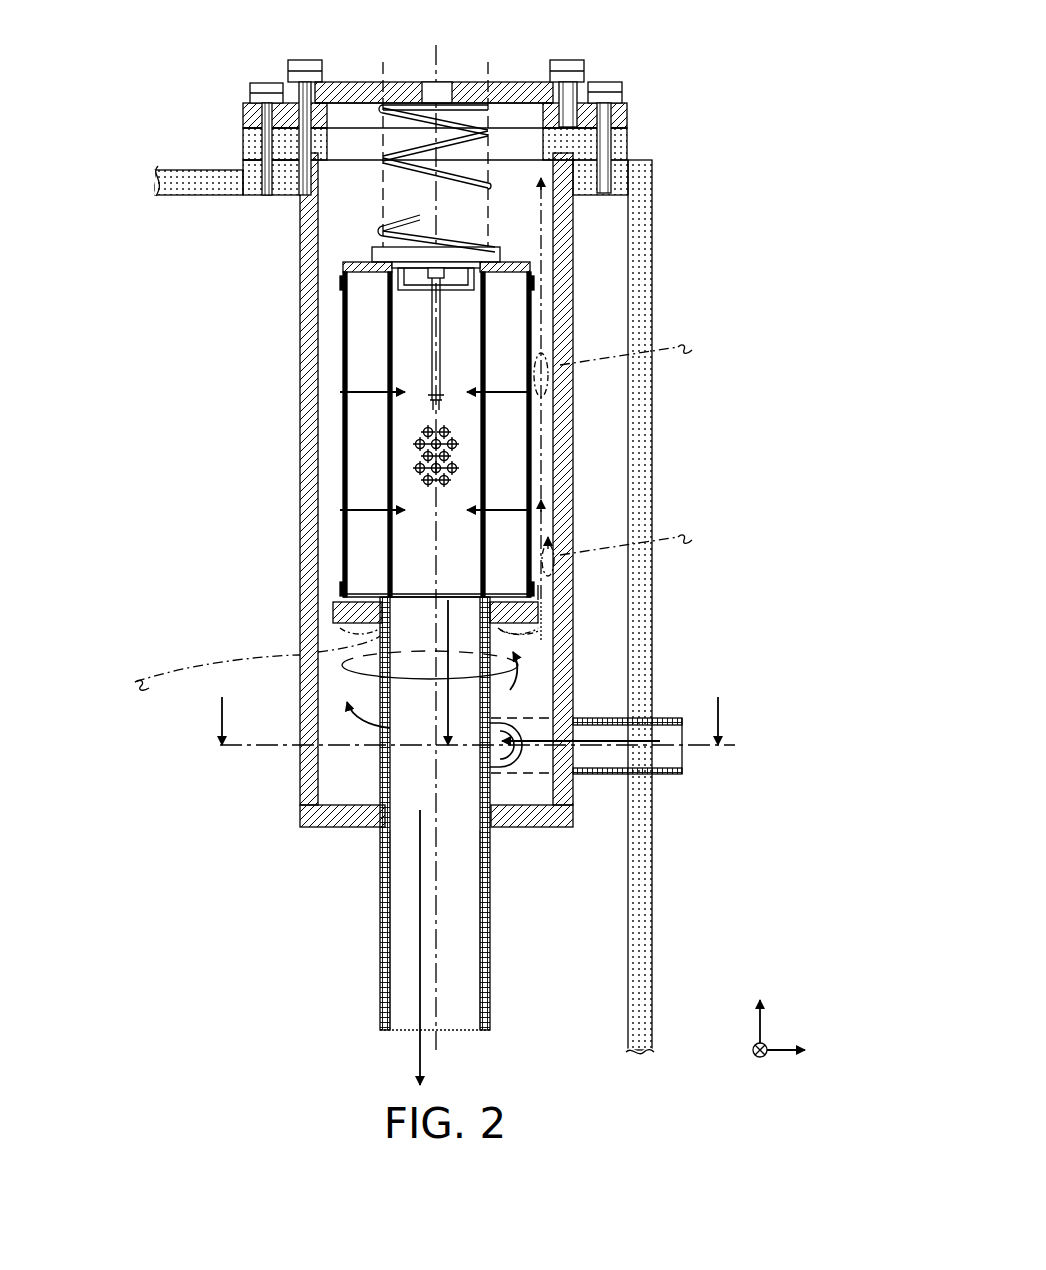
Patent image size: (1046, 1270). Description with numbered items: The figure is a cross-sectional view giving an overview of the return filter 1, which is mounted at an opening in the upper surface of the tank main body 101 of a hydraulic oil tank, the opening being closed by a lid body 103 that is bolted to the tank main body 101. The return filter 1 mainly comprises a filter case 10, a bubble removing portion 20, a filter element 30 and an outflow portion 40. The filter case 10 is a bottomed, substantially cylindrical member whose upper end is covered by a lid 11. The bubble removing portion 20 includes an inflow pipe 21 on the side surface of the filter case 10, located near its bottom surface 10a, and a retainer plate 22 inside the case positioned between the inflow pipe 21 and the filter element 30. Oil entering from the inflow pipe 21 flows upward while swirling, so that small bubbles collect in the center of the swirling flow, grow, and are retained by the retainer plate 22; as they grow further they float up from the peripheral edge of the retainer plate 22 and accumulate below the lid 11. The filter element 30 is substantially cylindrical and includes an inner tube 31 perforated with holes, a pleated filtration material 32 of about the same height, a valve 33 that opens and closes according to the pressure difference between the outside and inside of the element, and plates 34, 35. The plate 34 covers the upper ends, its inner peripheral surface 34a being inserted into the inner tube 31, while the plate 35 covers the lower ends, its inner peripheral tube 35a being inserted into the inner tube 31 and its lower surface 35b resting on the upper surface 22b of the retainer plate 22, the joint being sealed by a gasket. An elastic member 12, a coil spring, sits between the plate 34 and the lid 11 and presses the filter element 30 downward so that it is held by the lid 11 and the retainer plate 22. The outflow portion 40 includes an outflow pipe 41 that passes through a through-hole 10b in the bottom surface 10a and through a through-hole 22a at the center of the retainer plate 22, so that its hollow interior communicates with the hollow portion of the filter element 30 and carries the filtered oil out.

The return filter 1 is at (729, 57).
The filter case 10 is at (312, 190).
The bottom surface 10a is at (345, 820).
The through-hole 10b is at (383, 838).
The lid 11 is at (490, 100).
The elastic member 12 is at (400, 110).
The tank main body 101 is at (652, 240).
The lid body 103 is at (627, 108).
The bubble removing portion 20 is at (760, 590).
The inflow pipe 21 is at (625, 718).
The retainer plate 22 is at (548, 620).
The through-hole 22a is at (548, 637).
The upper surface 22b is at (560, 592).
The filter element 30 is at (132, 357).
The inner tube 31 is at (390, 420).
The filtration material 32 is at (365, 455).
The valve 33 is at (432, 325).
The plate 34 is at (340, 285).
The inner peripheral surface 34a is at (407, 291).
The plate 35 is at (340, 583).
The inner peripheral tube 35a is at (410, 567).
The lower surface 35b is at (360, 610).
The outflow portion 40 is at (737, 937).
The outflow pipe 41 is at (492, 973).